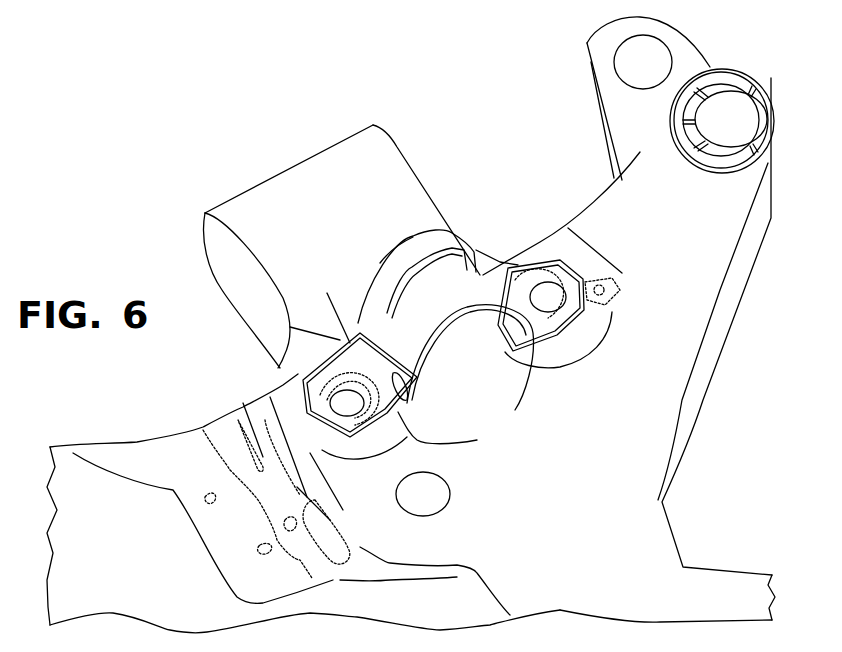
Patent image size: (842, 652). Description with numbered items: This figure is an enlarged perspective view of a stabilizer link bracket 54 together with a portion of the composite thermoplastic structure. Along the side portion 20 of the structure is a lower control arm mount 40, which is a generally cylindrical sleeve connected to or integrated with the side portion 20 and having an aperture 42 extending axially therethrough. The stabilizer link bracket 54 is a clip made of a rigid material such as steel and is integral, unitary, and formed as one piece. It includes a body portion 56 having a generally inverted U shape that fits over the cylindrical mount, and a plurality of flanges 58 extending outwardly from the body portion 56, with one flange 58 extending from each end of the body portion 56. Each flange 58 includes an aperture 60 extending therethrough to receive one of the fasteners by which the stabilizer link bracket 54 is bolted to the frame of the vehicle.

The side portion 20 is at (100, 443).
The lower control arm mount 40 is at (303, 190).
The aperture 42 is at (237, 277).
The stabilizer link bracket 54 is at (416, 238).
The body portion 56 is at (474, 275).
The flange 58 is at (553, 268).
The aperture 60 is at (553, 302).